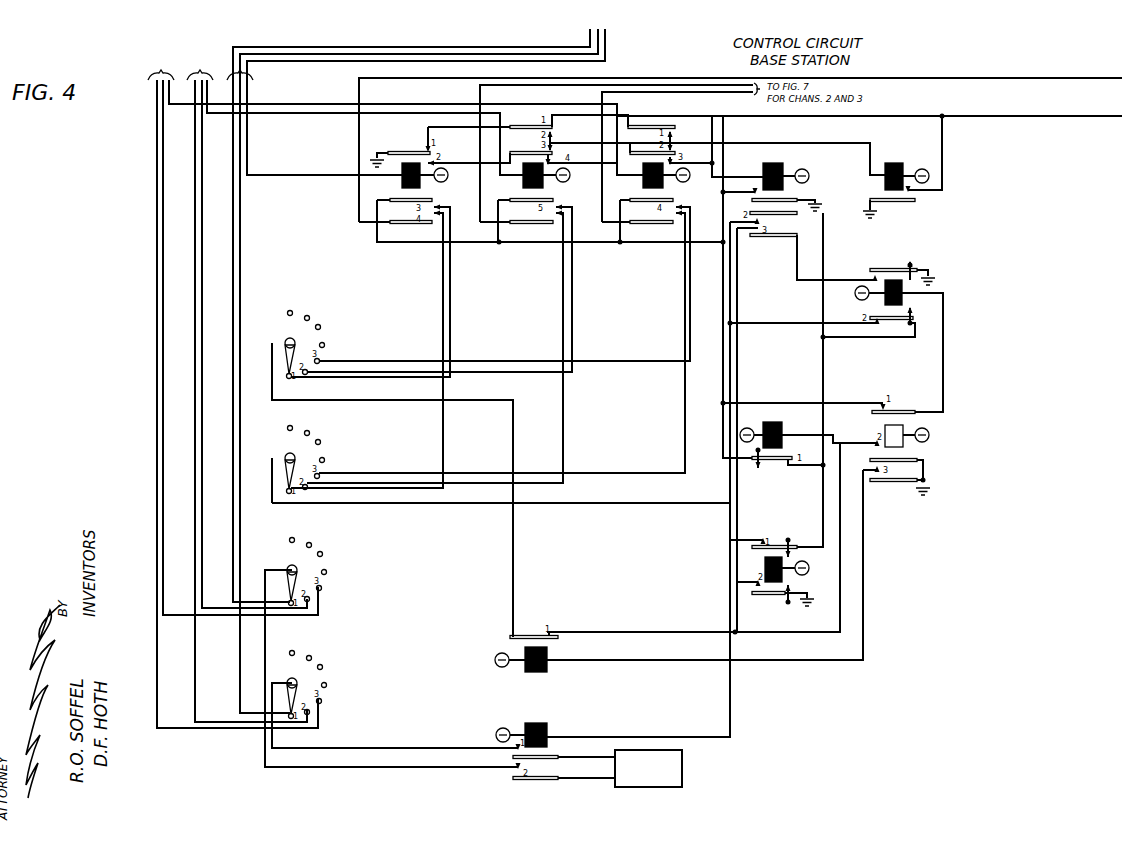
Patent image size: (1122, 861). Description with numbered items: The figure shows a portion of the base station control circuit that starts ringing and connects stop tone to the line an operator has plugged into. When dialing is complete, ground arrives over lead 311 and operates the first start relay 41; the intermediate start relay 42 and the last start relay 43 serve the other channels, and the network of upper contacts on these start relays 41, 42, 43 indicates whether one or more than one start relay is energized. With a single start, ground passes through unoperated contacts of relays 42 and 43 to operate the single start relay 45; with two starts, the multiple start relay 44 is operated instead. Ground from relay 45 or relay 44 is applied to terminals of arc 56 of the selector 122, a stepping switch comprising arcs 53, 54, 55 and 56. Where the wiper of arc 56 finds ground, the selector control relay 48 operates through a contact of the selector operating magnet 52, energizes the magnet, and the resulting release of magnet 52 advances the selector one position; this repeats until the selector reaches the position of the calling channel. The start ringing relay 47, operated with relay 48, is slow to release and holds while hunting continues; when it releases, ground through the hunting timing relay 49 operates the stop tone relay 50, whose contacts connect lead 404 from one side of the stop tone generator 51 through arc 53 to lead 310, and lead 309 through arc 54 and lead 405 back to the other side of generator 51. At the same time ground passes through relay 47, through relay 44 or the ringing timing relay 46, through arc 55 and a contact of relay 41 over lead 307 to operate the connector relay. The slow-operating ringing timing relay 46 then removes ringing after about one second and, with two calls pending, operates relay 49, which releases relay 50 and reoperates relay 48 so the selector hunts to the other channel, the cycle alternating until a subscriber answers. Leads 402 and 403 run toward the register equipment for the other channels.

The first start relay 41 is at (402, 185).
The intermediate start relay 42 is at (523, 185).
The last start relay 43 is at (643, 185).
The multiple start relay 44 is at (763, 166).
The single start relay 45 is at (885, 182).
The ringing timing relay 46 is at (902, 300).
The start ringing relay 47 is at (782, 425).
The selector control relay 48 is at (885, 429).
The hunting timing relay 49 is at (782, 560).
The stop tone relay 50 is at (547, 726).
The stop tone generator 51 is at (683, 769).
The selector operating magnet 52 is at (547, 670).
The arc of selector 53 is at (307, 686).
The arc of selector 54 is at (304, 573).
The arc of selector 55 is at (304, 461).
The arc of selector 56 is at (304, 346).
The selector 122 is at (374, 333).
The lead 307 is at (740, 127).
The lead 309 is at (590, 42).
The lead 310 is at (605, 37).
The lead 311 is at (607, 54).
The conductor 402 is at (647, 92).
The conductor 403 is at (697, 92).
The lead 404 is at (602, 756).
The lead 405 is at (602, 778).